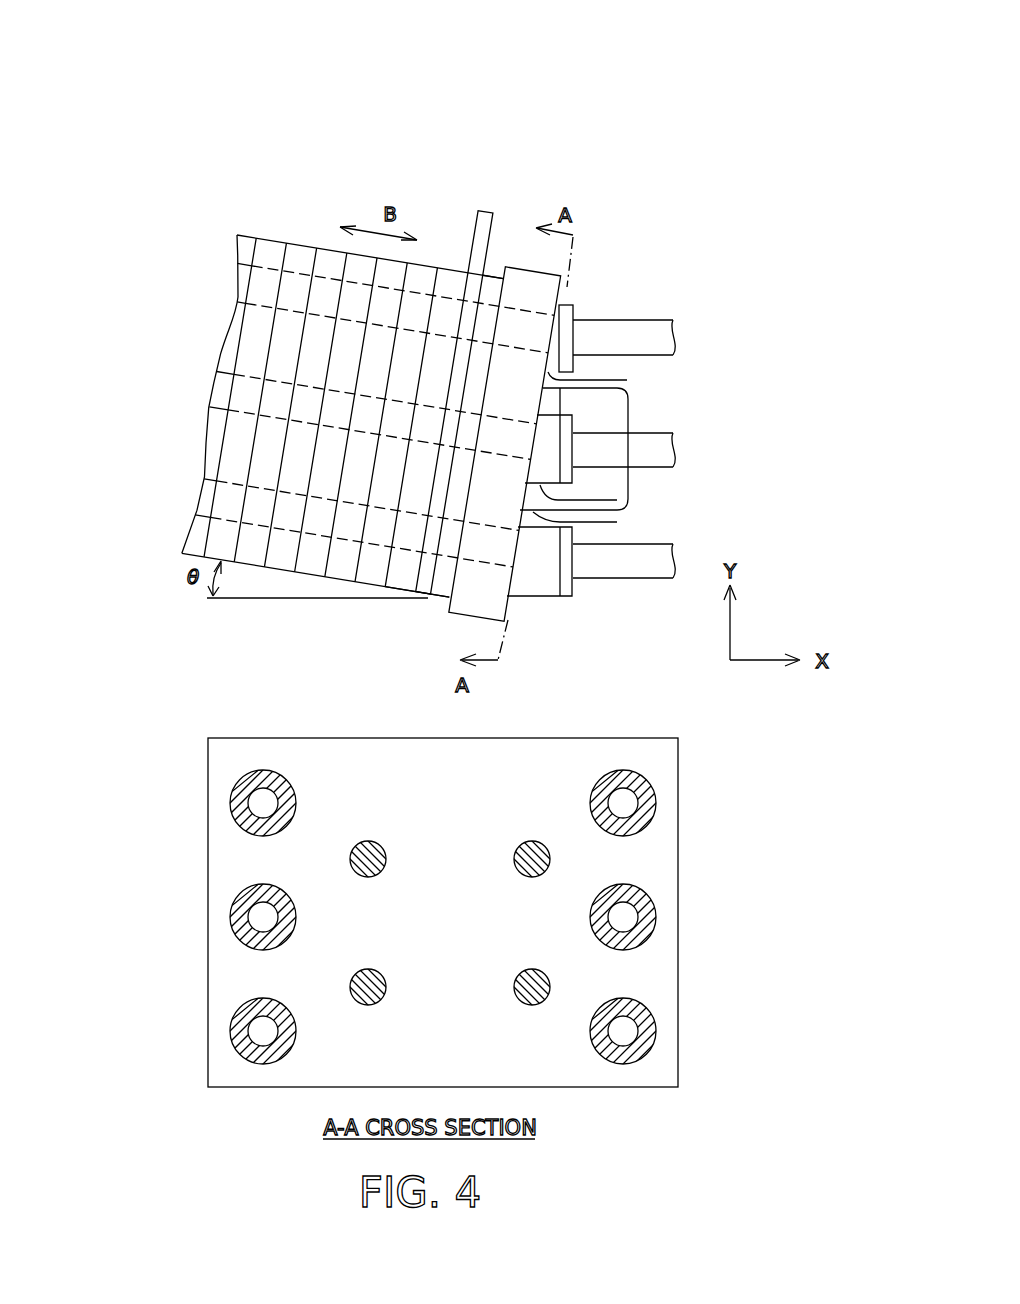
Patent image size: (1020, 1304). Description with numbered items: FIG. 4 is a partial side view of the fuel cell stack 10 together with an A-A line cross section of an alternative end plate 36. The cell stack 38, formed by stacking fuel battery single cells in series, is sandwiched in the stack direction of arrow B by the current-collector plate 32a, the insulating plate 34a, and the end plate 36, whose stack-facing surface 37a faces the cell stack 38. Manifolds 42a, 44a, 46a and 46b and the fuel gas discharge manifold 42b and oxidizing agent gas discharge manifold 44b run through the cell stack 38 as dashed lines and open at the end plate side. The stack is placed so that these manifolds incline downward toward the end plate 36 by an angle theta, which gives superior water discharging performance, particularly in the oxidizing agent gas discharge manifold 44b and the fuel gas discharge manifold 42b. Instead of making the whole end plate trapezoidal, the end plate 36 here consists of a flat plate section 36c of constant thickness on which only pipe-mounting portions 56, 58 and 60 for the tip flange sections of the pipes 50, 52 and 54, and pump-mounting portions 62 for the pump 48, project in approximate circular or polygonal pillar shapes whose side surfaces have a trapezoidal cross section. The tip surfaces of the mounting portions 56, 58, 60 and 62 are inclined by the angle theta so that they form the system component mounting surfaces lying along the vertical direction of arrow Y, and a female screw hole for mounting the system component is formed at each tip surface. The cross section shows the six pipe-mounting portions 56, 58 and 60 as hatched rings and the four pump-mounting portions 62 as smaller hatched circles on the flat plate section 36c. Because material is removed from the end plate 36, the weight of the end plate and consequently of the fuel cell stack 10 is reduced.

The fuel cell stack 10 is at (388, 164).
The cell stack 38 is at (310, 363).
The current-collector plate 32a is at (477, 229).
The stack-facing surface 37a is at (493, 287).
The end plate 36 is at (538, 295).
The flat plate section 36c is at (467, 617).
The insulating plate 34a is at (442, 583).
The manifold 42a is at (395, 289).
The manifold 44a is at (392, 327).
The manifold 46a is at (377, 398).
The manifold 46b is at (369, 433).
The fuel gas discharge manifold 42b is at (361, 505).
The oxidizing agent gas discharge manifold 44b is at (354, 541).
The pump 48 is at (628, 398).
The pipe 50 is at (660, 319).
The pipe 52 is at (676, 434).
The pipe 54 is at (637, 578).
The pipe-mounting portion 56 is at (627, 380).
The pipe-mounting portion 58 is at (617, 500).
The pipe-mounting portion 60 is at (536, 597).
The pump-mounting portion 62 is at (617, 522).